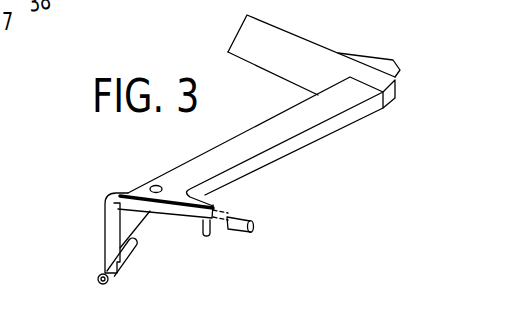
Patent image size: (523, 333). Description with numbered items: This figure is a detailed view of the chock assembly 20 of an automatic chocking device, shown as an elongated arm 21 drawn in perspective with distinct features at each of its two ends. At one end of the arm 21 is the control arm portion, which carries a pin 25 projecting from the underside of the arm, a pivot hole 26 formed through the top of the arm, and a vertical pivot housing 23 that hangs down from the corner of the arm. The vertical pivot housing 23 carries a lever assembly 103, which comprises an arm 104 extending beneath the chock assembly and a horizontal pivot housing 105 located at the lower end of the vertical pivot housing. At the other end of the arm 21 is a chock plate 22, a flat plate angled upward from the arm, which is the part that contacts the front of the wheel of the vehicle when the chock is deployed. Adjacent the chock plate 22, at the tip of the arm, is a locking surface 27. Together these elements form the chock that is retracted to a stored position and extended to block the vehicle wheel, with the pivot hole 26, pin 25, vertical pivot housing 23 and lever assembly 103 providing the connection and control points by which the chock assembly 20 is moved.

The chock assembly 20 is at (256, 162).
The arm 21 is at (287, 150).
The chock plate 22 is at (298, 40).
The vertical pivot housing 23 is at (104, 225).
The pin 25 is at (212, 233).
The pivot hole 26 is at (152, 183).
The locking surface 27 is at (400, 70).
The lever assembly 103 is at (126, 277).
The arm 104 is at (184, 219).
The horizontal pivot housing 105 is at (98, 277).